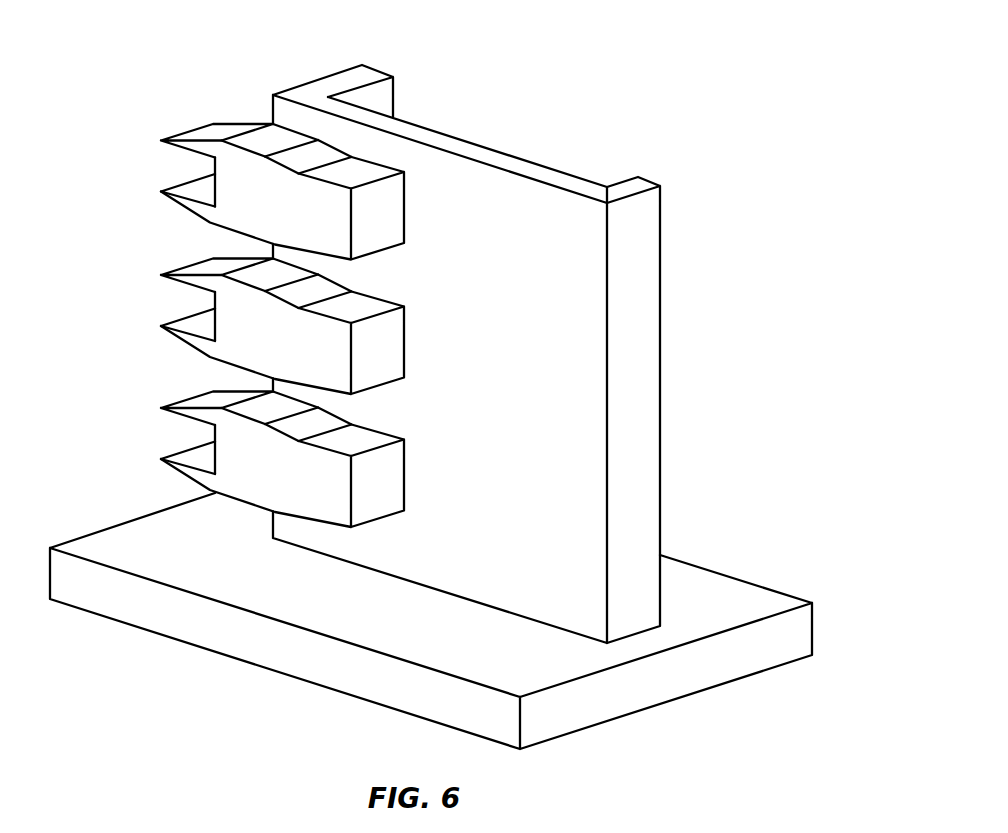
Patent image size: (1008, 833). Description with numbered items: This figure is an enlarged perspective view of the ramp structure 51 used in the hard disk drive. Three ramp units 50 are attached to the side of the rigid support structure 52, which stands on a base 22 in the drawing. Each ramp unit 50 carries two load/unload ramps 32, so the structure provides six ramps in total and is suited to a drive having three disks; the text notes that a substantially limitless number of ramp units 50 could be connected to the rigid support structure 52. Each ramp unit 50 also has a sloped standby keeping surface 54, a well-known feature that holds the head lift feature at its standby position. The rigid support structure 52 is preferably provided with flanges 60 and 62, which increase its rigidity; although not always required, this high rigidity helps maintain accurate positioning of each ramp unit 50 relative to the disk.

The base 22 is at (501, 675).
The load/unload ramp 32 is at (205, 133).
The ramp unit 50 is at (239, 206).
The ramp structure 51 is at (431, 387).
The rigid support structure 52 is at (503, 383).
The standby keeping surface 54 is at (312, 160).
The flange 60 is at (385, 105).
The flange 62 is at (633, 189).